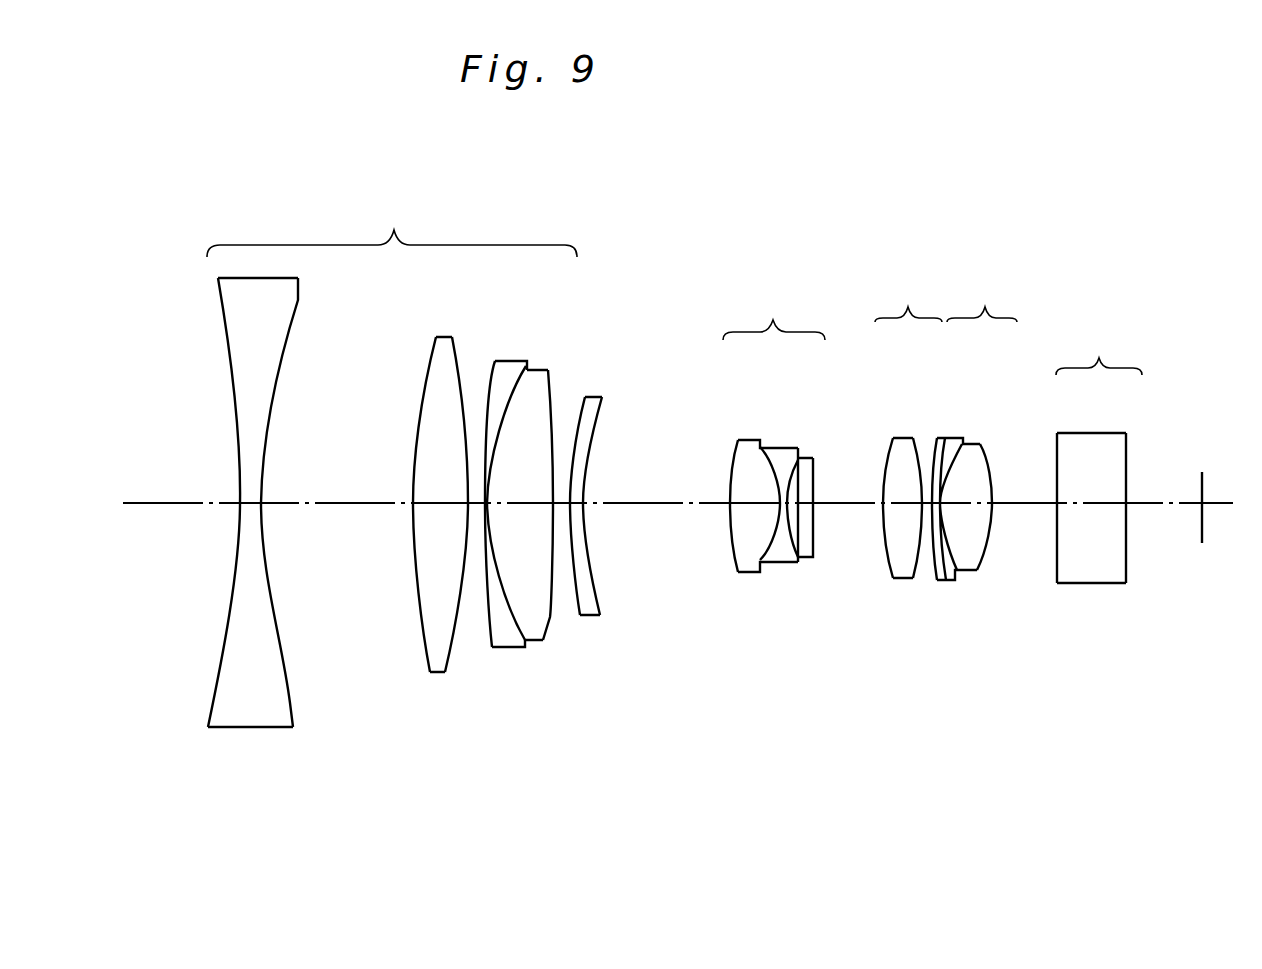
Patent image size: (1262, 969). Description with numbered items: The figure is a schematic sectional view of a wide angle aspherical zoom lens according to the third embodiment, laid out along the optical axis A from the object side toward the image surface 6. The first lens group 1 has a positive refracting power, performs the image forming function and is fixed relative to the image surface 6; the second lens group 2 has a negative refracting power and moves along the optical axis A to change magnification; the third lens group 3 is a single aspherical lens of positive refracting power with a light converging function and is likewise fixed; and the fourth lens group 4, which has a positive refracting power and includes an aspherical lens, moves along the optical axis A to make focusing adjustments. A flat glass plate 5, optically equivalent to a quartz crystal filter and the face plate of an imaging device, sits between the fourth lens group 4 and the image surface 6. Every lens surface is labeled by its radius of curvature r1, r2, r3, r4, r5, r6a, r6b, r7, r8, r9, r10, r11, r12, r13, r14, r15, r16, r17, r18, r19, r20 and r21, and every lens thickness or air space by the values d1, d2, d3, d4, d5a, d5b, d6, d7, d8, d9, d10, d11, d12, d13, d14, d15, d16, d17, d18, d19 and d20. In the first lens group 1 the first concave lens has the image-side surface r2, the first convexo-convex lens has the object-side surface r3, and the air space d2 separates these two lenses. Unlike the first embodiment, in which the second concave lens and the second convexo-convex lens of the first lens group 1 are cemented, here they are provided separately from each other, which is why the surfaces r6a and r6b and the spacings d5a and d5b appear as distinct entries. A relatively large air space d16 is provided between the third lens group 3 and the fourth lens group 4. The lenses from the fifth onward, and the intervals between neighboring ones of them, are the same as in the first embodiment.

The first lens group 1 is at (393, 222).
The second lens group 2 is at (773, 318).
The third lens group 3 is at (908, 305).
The fourth lens group 4 is at (985, 305).
The flat glass plate 5 is at (1098, 357).
The image surface 6 is at (1199, 468).
The optical axis A is at (1213, 503).
The lens thickness d1 is at (247, 498).
The air space d2 is at (330, 503).
The lens thickness d3 is at (425, 498).
The air space d4 is at (462, 478).
The lens thickness or air space d5a is at (471, 500).
The lens thickness or air space d5b is at (520, 503).
The lens thickness or air space d6 is at (551, 445).
The lens thickness or air space d7 is at (575, 470).
The lens thickness or air space d8 is at (571, 503).
The air space d9 is at (633, 503).
The lens thickness or air space d10 is at (730, 503).
The lens thickness or air space d11 is at (756, 500).
The lens thickness or air space d12 is at (784, 503).
The lens thickness or air space d13 is at (812, 457).
The air space d14 is at (823, 503).
The lens thickness d15 is at (900, 503).
The air space d16 is at (927, 503).
The lens thickness or air space d17 is at (960, 437).
The lens thickness or air space d18 is at (972, 503).
The air space d19 is at (1010, 503).
The plate thickness d20 is at (1072, 503).
The radius of curvature r1 is at (235, 570).
The radius of curvature r2 is at (268, 618).
The radius of curvature r3 is at (412, 530).
The radius of curvature r4 is at (463, 570).
The radius of curvature r5 is at (489, 590).
The radius of curvature r6a is at (505, 608).
The radius of curvature r6b is at (512, 614).
The radius of curvature r7 is at (550, 617).
The radius of curvature r8 is at (577, 615).
The radius of curvature r9 is at (603, 615).
The radius of curvature r10 is at (730, 525).
The radius of curvature r11 is at (742, 543).
The radius of curvature r12 is at (738, 563).
The radius of curvature r13 is at (790, 540).
The radius of curvature r14 is at (815, 557).
The radius of curvature r15 is at (892, 578).
The radius of curvature r16 is at (916, 578).
The radius of curvature r17 is at (937, 580).
The radius of curvature r18 is at (957, 570).
The radius of curvature r19 is at (988, 565).
The radius of curvature r20 is at (1057, 567).
The radius of curvature r21 is at (1125, 565).